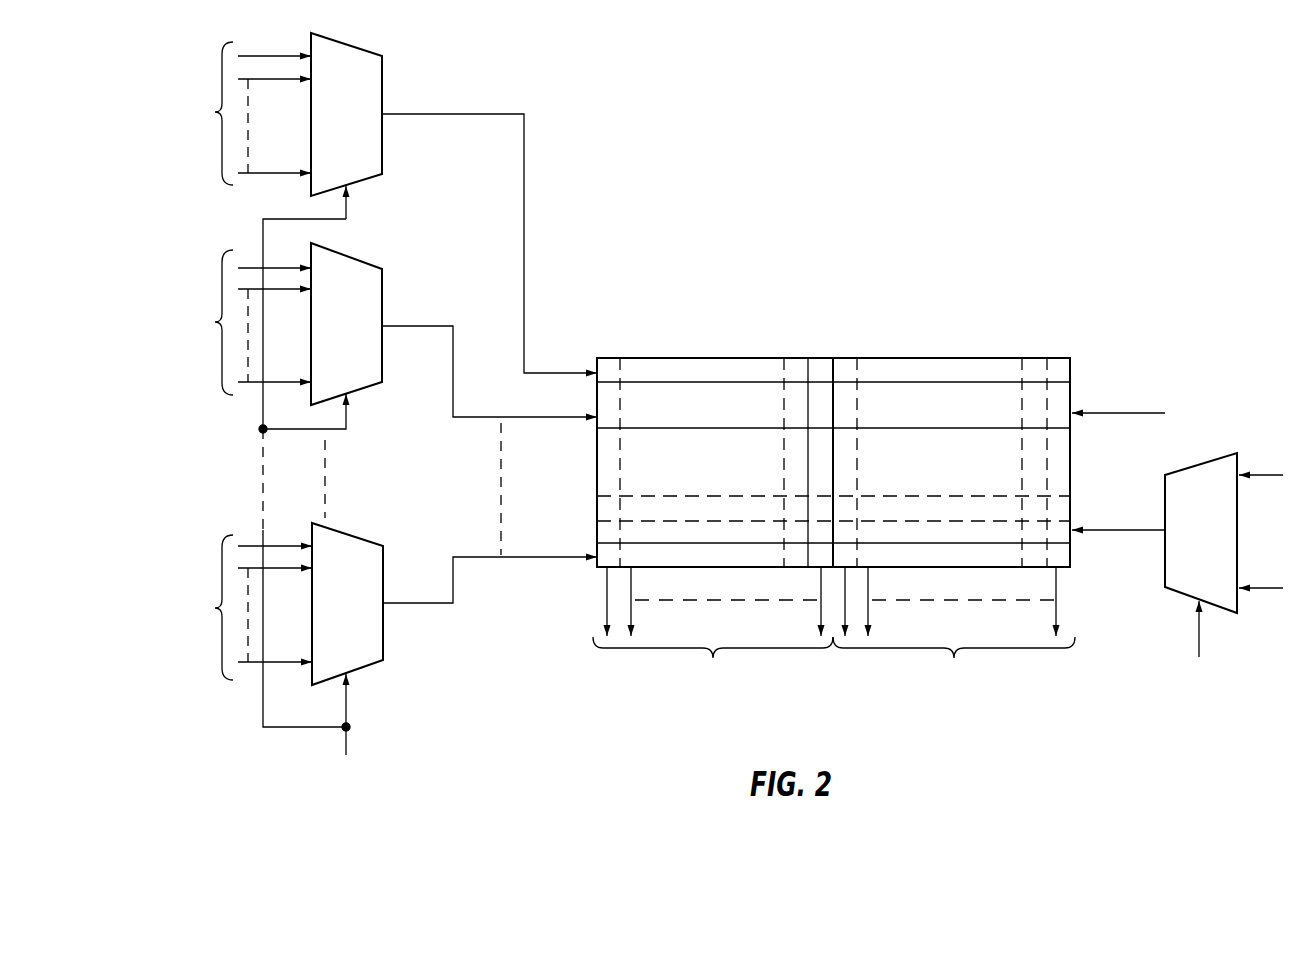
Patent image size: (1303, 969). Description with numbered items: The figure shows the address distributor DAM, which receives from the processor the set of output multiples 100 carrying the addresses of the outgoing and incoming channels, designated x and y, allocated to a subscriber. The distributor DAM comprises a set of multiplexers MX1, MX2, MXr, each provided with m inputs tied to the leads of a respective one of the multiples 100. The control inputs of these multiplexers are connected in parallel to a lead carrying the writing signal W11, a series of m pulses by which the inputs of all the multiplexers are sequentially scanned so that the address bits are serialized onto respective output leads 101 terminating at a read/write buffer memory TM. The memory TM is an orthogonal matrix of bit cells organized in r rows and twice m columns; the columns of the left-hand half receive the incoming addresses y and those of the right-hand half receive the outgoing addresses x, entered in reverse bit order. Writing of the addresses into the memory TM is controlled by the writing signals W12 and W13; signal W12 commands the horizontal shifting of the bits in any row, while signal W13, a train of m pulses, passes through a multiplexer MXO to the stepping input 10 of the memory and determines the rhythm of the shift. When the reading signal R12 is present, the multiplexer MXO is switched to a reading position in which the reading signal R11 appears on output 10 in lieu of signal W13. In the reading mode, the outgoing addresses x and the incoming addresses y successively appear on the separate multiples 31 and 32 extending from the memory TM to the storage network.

The output multiples 100 is at (212, 114).
The output leads 101 is at (494, 113).
The multiplexer MX1 is at (373, 142).
The multiplexer MX2 is at (367, 379).
The multiplexer MXr is at (363, 546).
The multiplexer MXO is at (1172, 500).
The read/write buffer memory TM is at (1073, 385).
The address distributor DAM is at (914, 297).
The writing signal W11 is at (348, 698).
The writing signal W12 is at (1150, 412).
The writing signal W13 is at (1262, 473).
The reading signal R11 is at (1270, 590).
The reading signal R12 is at (1201, 644).
The output 10 is at (1126, 532).
The multiple 31 is at (954, 664).
The multiple 32 is at (713, 664).